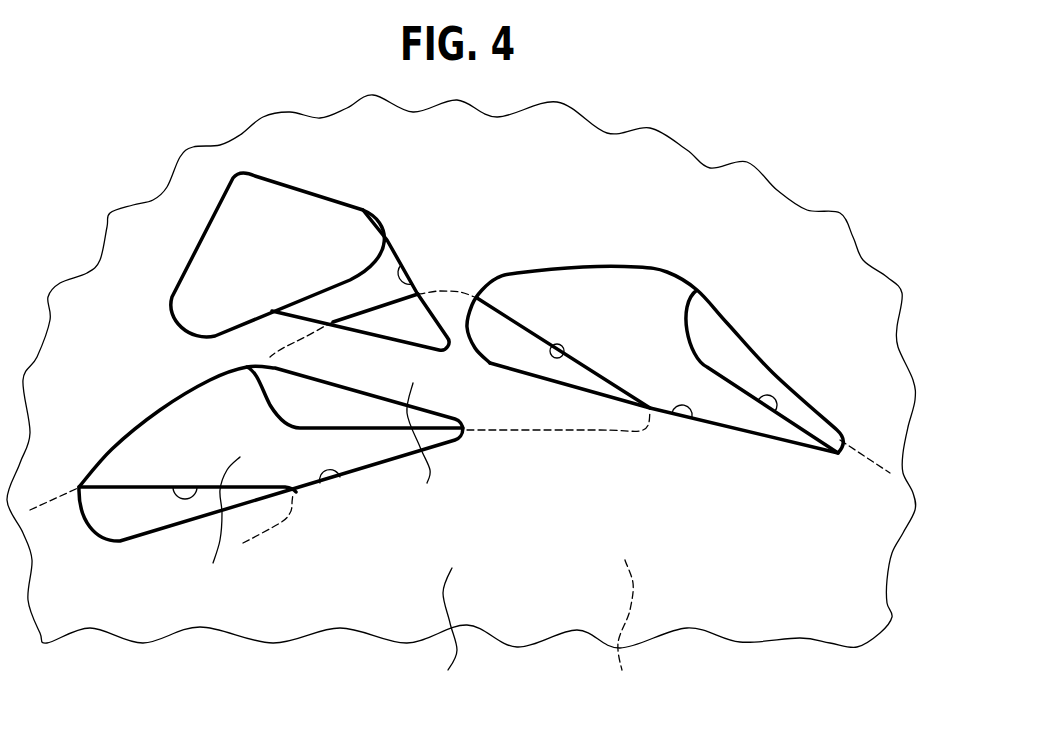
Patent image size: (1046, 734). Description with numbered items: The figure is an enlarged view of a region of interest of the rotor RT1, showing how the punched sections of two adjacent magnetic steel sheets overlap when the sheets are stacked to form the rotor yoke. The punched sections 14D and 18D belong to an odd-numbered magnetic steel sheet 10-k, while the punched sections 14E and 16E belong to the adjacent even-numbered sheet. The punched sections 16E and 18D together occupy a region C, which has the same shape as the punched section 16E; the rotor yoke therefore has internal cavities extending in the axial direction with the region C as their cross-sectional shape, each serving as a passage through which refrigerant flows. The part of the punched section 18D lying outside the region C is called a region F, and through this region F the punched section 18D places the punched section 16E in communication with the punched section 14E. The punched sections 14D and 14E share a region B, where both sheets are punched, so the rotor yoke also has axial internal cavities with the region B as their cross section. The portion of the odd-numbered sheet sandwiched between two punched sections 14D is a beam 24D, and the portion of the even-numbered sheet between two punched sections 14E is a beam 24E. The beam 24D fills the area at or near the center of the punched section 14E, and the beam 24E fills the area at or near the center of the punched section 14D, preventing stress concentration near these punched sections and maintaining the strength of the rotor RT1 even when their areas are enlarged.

The rotor RT1 is at (757, 129).
The second internal cavity region C is at (282, 268).
The region F is at (416, 333).
The first internal cavity region B is at (141, 523).
The punched section 16E is at (345, 278).
The punched section 18D is at (401, 265).
The punched section 14E is at (197, 487).
The punched section 14D is at (340, 477).
The beam 24D is at (435, 451).
The beam 24E is at (220, 531).
The magnetic steel sheet 10-k is at (457, 640).